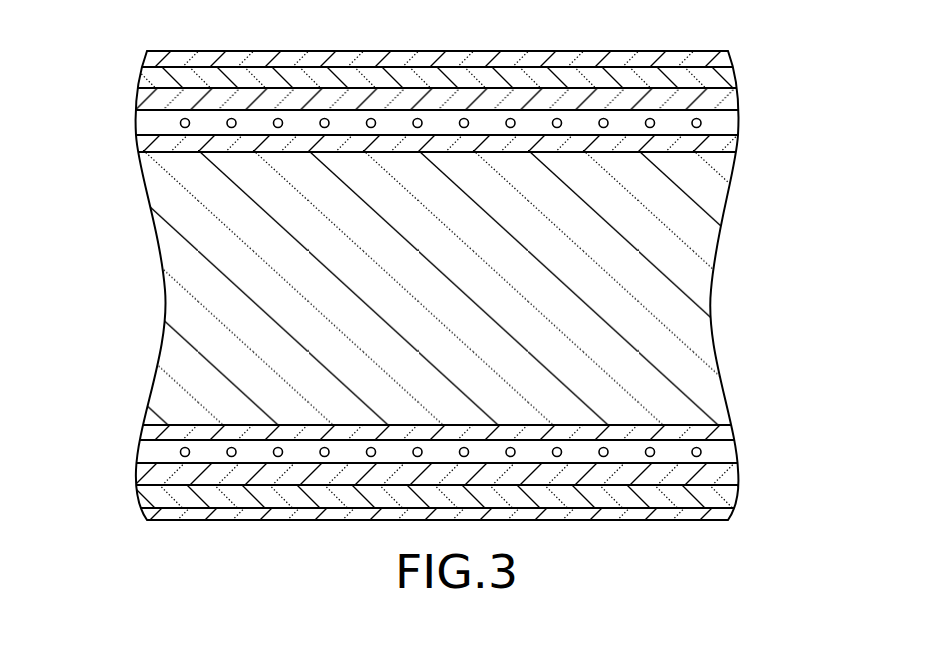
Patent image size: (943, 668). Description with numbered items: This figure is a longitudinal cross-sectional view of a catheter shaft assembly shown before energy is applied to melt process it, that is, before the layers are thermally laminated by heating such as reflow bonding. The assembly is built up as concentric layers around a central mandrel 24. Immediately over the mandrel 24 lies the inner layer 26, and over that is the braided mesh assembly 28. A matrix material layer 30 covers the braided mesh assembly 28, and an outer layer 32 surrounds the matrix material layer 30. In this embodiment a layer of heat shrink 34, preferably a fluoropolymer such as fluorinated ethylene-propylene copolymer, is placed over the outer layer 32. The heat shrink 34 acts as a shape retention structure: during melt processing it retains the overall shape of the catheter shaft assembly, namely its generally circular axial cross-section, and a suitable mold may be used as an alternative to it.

The mandrel 24 is at (705, 292).
The inner layer 26 is at (728, 425).
The braided mesh assembly 28 is at (152, 123).
The matrix material layer 30 is at (138, 477).
The outer layer 32 is at (725, 78).
The heat shrink 34 is at (727, 58).